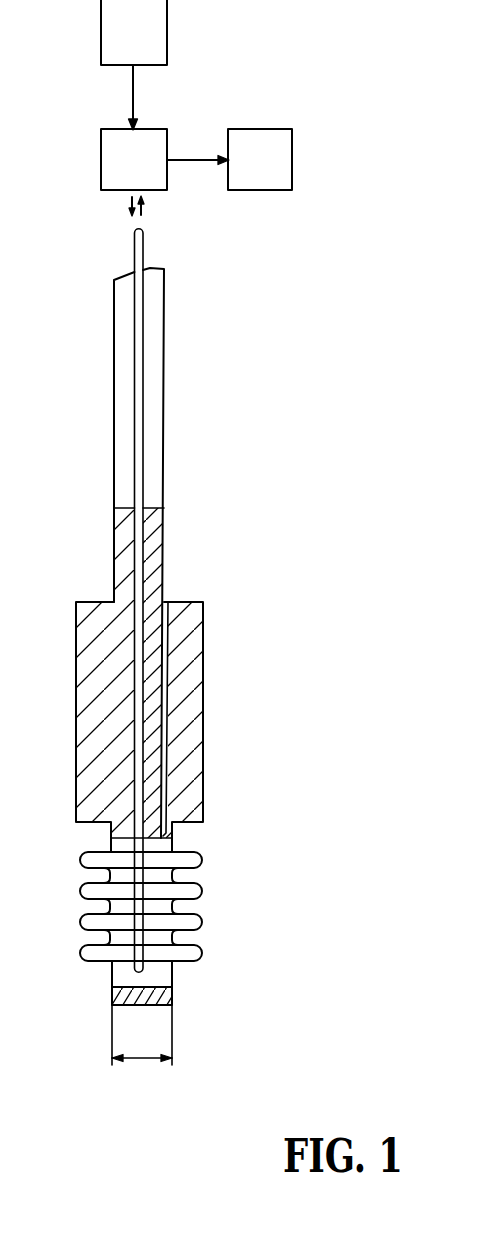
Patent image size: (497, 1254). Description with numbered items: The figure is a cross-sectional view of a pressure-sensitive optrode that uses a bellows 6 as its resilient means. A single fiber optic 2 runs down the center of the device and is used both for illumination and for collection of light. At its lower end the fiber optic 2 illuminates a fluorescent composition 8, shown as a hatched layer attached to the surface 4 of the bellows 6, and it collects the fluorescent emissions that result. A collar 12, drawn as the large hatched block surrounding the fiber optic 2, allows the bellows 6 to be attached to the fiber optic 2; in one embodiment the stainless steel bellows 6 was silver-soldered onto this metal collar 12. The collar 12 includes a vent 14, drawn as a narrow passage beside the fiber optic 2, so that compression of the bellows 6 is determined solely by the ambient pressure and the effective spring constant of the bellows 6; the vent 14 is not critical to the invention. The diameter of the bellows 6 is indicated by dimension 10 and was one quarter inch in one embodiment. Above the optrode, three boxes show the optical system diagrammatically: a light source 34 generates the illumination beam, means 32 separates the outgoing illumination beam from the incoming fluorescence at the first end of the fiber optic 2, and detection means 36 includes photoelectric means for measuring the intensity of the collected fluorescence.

The fiber optic 2 is at (145, 245).
The surface of the bellows 4 is at (130, 1005).
The bellows 6 is at (202, 888).
The fluorescent composition 8 is at (172, 1003).
The dimension 10 is at (138, 1060).
The collar 12 is at (203, 682).
The vent 14 is at (168, 602).
The means for separating the outgoing illumination beam from the incoming fluorescen 32 is at (151, 175).
The light source 34 is at (151, 40).
The detection means 36 is at (277, 175).